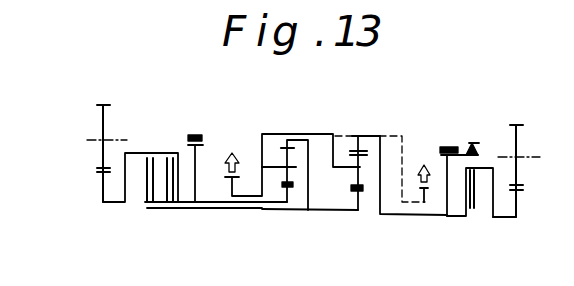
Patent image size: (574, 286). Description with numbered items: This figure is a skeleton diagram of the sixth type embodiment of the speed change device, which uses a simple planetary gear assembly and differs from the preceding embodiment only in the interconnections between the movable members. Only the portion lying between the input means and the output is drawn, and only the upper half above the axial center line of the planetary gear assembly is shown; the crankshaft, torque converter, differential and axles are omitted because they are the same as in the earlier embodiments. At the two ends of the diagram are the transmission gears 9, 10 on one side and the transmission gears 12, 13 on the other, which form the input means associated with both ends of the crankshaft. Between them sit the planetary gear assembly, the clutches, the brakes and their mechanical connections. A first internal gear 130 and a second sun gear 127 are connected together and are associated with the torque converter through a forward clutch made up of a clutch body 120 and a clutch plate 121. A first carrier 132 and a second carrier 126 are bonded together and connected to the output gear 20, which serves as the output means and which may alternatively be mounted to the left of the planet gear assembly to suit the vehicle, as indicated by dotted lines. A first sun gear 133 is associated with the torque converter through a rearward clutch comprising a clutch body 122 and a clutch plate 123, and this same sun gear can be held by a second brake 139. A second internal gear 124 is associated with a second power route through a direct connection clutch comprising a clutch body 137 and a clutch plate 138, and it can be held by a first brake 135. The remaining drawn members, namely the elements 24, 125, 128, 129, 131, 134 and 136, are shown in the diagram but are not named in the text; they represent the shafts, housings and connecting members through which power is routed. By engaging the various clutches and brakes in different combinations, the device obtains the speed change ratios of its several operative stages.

The transmission gear 9 is at (103, 158).
The transmission gear 10 is at (103, 185).
The transmission gear 12 is at (522, 170).
The transmission gear 13 is at (516, 203).
The output gear 20 is at (230, 185).
The output member 24 is at (504, 219).
The clutch body 120 is at (143, 160).
The clutch plate 121 is at (144, 190).
The clutch body 122 is at (170, 190).
The clutch plate 123 is at (184, 209).
The second internal gear 124 is at (360, 135).
The housing (dashed) 125 is at (359, 150).
The second carrier 126 is at (358, 167).
The second sun gear 127 is at (358, 212).
The shaft 128 is at (294, 213).
The shaft 129 is at (213, 209).
The first internal gear 130 is at (287, 140).
The clutch plate 131 is at (283, 157).
The first carrier 132 is at (281, 160).
The first sun gear 133 is at (283, 195).
The one-way clutch 134 is at (474, 141).
The first brake 135 is at (448, 146).
The drum member 136 is at (413, 216).
The clutch body 137 is at (475, 198).
The clutch plate 138 is at (464, 195).
The second brake 139 is at (195, 134).